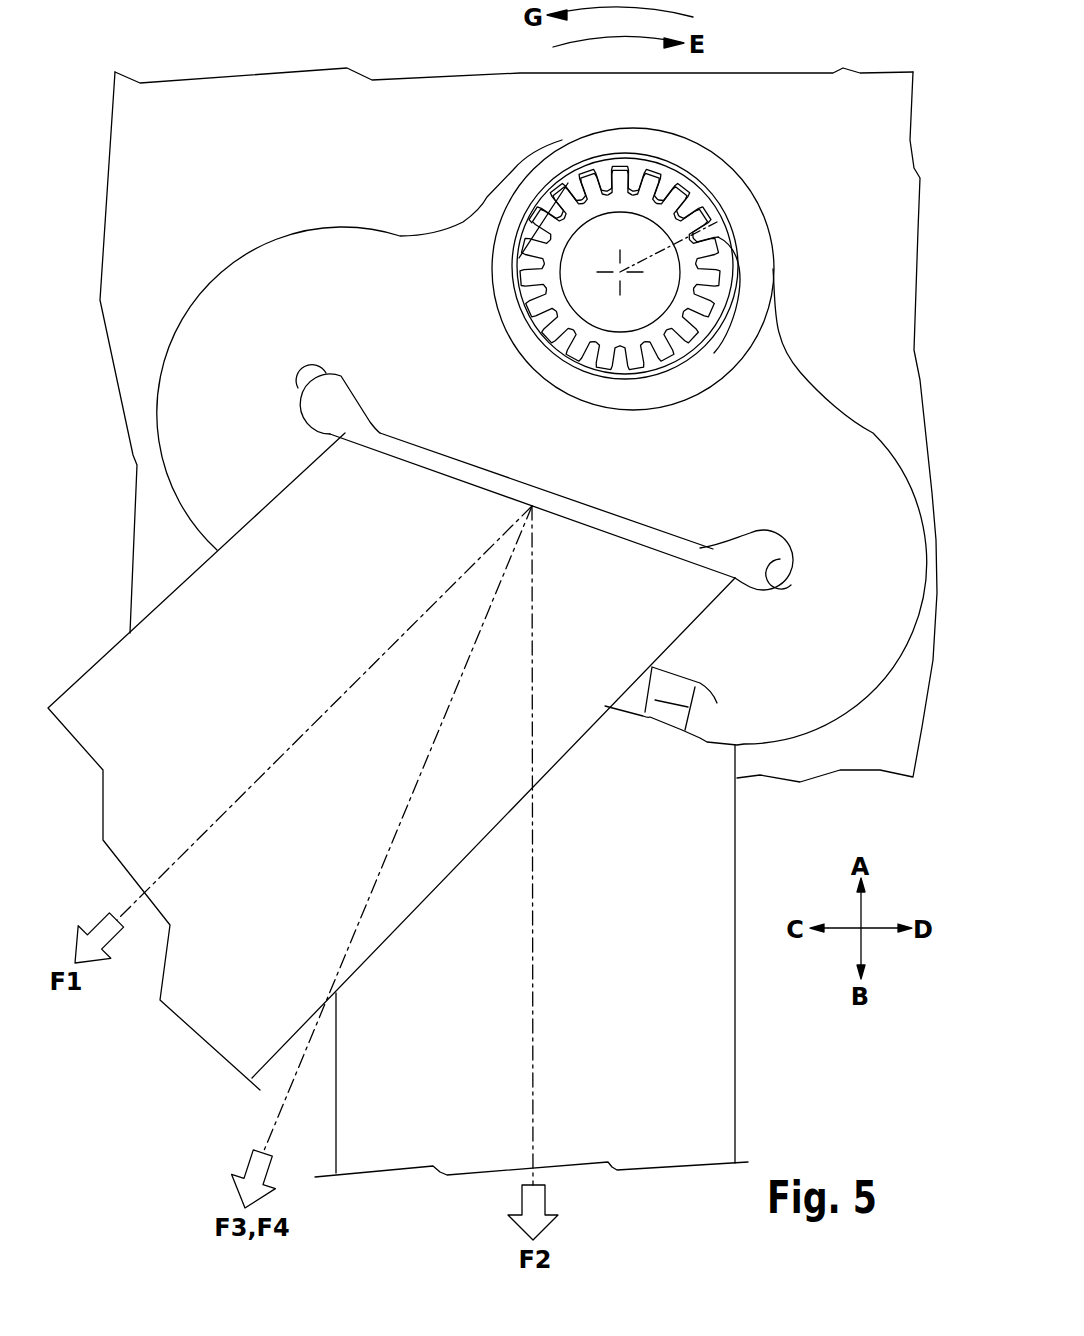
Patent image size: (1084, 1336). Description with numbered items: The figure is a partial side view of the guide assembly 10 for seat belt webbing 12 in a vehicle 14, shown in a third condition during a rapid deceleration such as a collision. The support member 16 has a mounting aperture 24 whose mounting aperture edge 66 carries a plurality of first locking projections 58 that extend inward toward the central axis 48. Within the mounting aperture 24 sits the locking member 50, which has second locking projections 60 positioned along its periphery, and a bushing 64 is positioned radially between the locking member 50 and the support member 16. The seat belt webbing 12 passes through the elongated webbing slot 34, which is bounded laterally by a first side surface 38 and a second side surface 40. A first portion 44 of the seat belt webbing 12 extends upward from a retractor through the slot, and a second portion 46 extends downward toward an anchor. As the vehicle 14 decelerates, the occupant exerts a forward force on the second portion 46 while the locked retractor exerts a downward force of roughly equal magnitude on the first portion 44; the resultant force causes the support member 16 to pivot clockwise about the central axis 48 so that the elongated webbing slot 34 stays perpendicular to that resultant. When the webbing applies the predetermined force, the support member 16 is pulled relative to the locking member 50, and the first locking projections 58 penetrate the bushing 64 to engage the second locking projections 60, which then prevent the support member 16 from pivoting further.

The guide assembly 10 is at (779, 64).
The seat belt webbing 12 is at (715, 995).
The vehicle 14 is at (837, 140).
The support member 16 is at (443, 252).
The mounting aperture 24 is at (672, 320).
The elongated webbing slot 34 is at (300, 411).
The first side surface 38 is at (297, 387).
The second side surface 40 is at (797, 560).
The first portion of the seat belt webbing 44 is at (728, 1057).
The second portion of the seat belt webbing 46 is at (160, 798).
The central axis 48 is at (717, 222).
The locking member 50 is at (630, 314).
The first locking projection 58 is at (683, 197).
The second locking projection 60 is at (717, 247).
The bushing 64 is at (588, 373).
The mounting aperture edge 66 is at (653, 197).